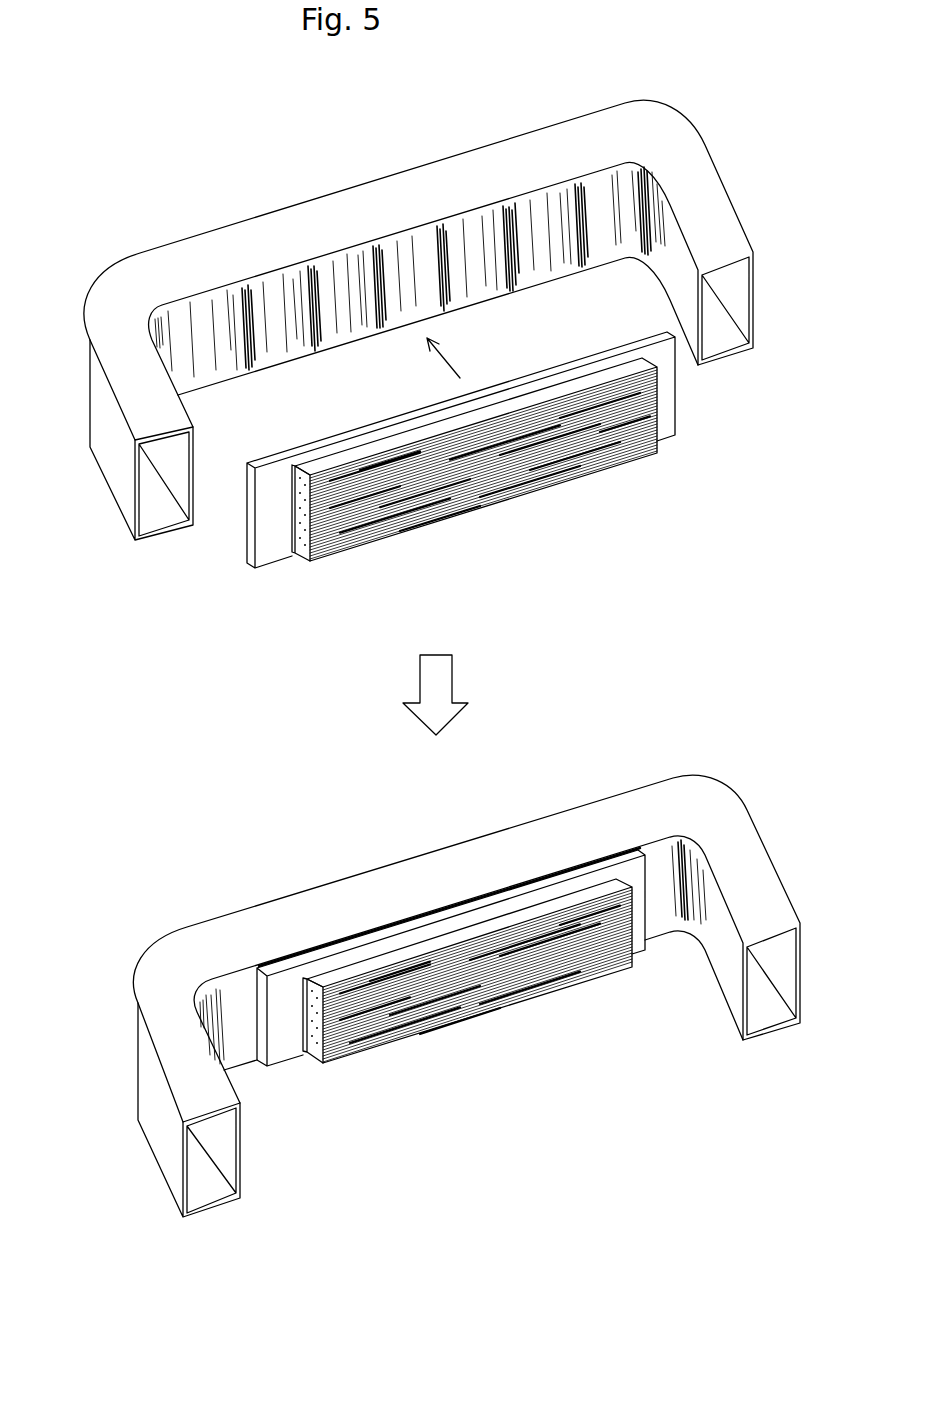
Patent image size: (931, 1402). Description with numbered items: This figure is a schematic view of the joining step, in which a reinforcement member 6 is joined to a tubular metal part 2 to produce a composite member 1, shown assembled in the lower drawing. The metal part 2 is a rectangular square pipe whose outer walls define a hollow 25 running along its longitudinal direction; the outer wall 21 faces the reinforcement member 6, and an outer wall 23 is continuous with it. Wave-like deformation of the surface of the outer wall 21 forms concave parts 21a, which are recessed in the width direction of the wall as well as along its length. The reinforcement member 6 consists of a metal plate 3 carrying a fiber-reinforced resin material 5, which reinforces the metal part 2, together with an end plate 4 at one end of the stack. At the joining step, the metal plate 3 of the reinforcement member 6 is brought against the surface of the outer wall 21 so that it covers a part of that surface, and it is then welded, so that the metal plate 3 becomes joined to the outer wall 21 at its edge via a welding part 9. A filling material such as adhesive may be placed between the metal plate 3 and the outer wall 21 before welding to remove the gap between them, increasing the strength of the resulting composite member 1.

The composite member 1 is at (766, 753).
The tubular metal part 2 is at (661, 128).
The metal plate 3 is at (267, 545).
The end plate 4 is at (293, 547).
The fiber-reinforced resin material 5 is at (387, 510).
The reinforcement member 6 is at (483, 731).
The welding part 9 is at (376, 925).
The outer wall 21 is at (488, 288).
The concave part 21a is at (602, 242).
The outer wall 23 is at (516, 160).
The hollow 25 is at (160, 512).